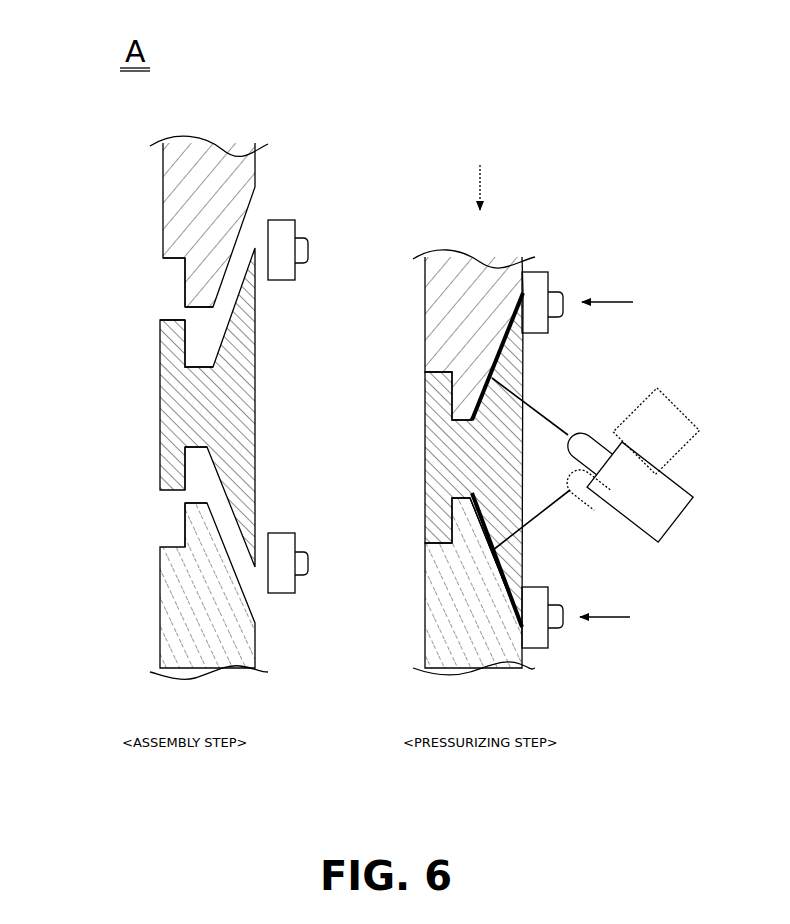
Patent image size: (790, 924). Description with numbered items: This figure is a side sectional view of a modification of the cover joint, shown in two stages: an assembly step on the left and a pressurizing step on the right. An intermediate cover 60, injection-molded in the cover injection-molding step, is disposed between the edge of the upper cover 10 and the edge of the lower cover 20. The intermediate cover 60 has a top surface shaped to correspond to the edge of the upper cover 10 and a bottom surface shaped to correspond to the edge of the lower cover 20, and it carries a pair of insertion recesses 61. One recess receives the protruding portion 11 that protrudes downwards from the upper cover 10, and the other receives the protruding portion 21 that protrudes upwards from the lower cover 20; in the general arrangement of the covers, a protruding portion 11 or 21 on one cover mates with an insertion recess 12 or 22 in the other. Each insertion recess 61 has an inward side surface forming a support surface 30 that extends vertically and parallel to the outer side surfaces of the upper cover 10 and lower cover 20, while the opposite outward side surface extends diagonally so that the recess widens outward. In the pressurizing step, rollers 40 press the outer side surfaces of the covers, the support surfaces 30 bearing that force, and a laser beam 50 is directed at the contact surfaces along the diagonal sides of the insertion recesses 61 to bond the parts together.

The upper cover 10 is at (122, 210).
The protruding portion 11 is at (195, 282).
The insertion recess 12 is at (177, 266).
The lower cover 20 is at (127, 612).
The protruding portion 21 is at (185, 516).
The insertion recess 22 is at (178, 540).
The support surface 30 is at (185, 331).
The roller 40 is at (288, 222).
The laser beam 50 is at (543, 510).
The intermediate cover 60 is at (122, 407).
The insertion recess 61 is at (201, 349).